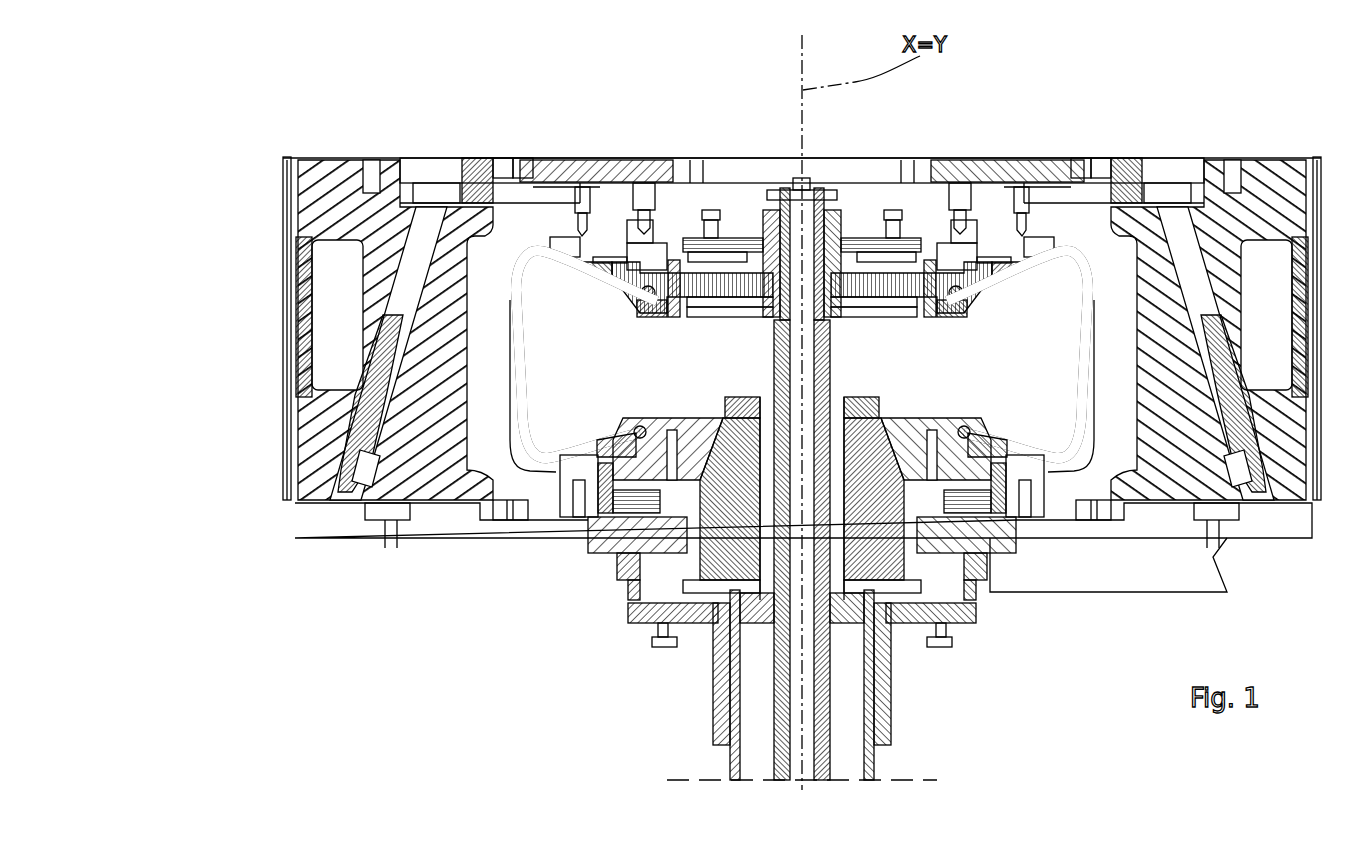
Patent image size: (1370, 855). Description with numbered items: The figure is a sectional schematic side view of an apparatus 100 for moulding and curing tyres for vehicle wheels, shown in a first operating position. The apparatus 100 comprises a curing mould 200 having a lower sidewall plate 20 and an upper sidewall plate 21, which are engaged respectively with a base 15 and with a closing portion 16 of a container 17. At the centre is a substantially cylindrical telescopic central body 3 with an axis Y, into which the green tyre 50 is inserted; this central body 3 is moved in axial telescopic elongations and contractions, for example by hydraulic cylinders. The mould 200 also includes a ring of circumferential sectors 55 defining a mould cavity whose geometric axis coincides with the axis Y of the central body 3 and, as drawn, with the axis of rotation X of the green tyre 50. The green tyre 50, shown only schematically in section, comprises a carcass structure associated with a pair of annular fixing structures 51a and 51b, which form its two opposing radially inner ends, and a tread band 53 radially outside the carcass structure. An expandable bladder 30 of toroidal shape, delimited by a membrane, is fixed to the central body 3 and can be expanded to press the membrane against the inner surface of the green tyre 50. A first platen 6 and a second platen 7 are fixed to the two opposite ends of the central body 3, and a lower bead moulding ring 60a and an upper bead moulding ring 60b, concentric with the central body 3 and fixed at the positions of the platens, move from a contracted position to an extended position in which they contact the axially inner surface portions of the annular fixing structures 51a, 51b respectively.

The telescopic central body 3 is at (836, 697).
The first platen 6 is at (913, 418).
The second platen 7 is at (908, 319).
The base 15 is at (981, 608).
The closing portion 16 is at (489, 156).
The container 17 is at (883, 352).
The lower sidewall plate 20 is at (595, 525).
The upper sidewall plate 21 is at (632, 250).
The expandable bladder 30 is at (535, 434).
The green tyre 50 is at (513, 474).
The first annular fixing structure 51a is at (578, 470).
The second annular fixing structure 51b is at (575, 235).
The tread band 53 is at (508, 338).
The circumferential sectors 55 is at (284, 375).
The lower bead moulding ring 60a is at (1010, 497).
The upper bead moulding ring 60b is at (653, 266).
The apparatus for moulding and curing tyres 100 is at (183, 277).
The curing mould 200 is at (416, 542).